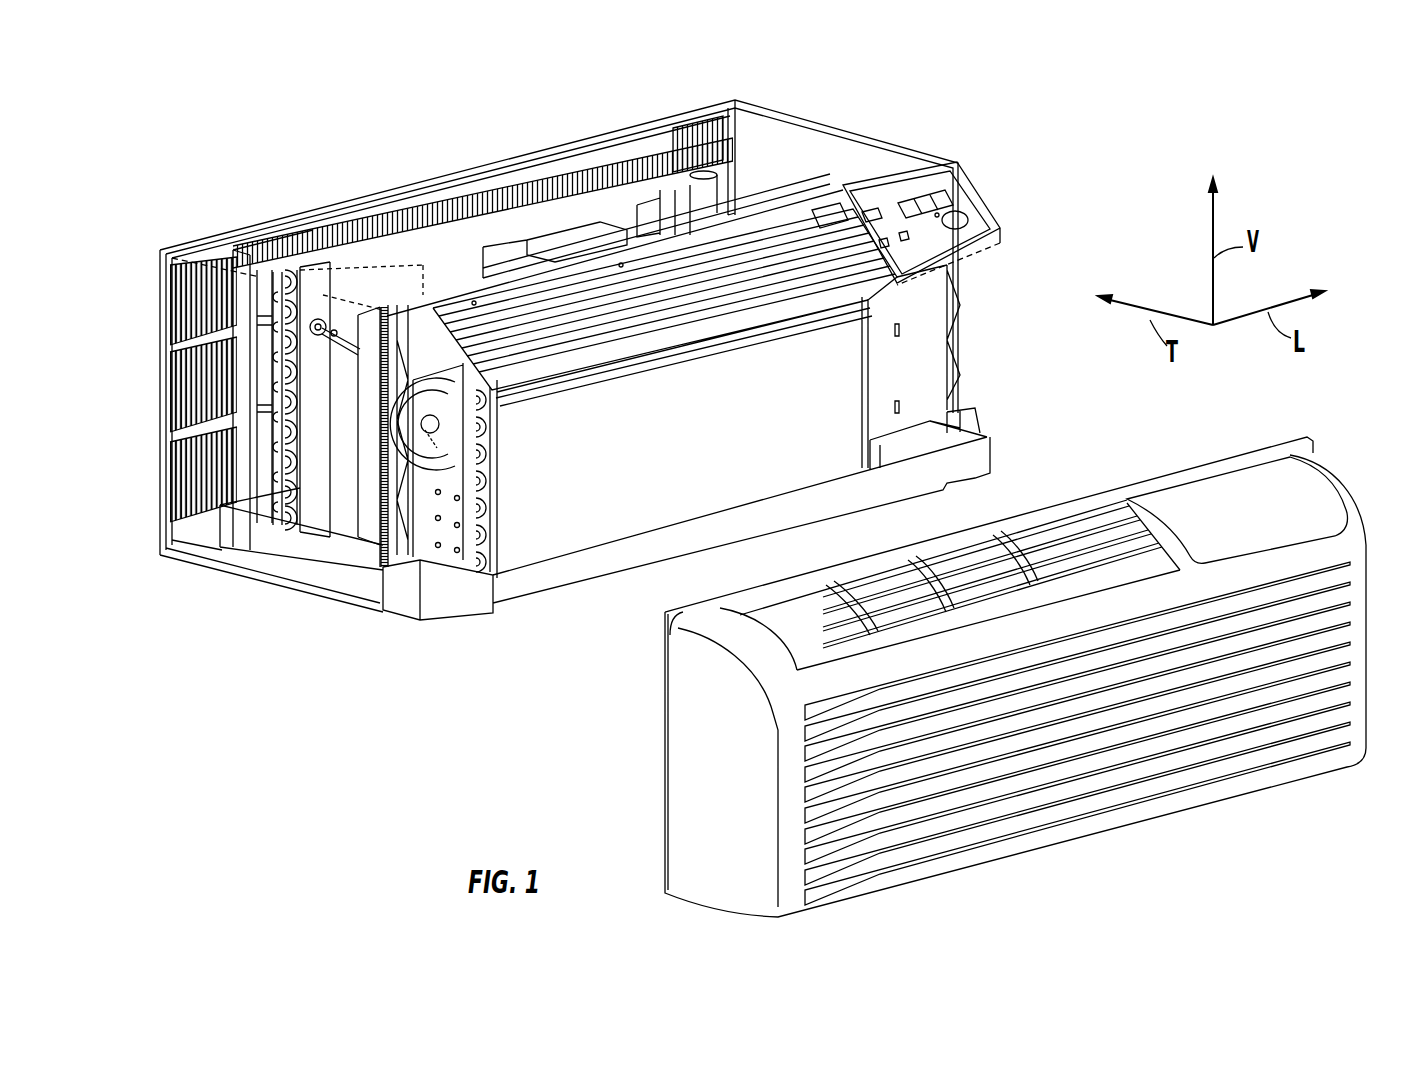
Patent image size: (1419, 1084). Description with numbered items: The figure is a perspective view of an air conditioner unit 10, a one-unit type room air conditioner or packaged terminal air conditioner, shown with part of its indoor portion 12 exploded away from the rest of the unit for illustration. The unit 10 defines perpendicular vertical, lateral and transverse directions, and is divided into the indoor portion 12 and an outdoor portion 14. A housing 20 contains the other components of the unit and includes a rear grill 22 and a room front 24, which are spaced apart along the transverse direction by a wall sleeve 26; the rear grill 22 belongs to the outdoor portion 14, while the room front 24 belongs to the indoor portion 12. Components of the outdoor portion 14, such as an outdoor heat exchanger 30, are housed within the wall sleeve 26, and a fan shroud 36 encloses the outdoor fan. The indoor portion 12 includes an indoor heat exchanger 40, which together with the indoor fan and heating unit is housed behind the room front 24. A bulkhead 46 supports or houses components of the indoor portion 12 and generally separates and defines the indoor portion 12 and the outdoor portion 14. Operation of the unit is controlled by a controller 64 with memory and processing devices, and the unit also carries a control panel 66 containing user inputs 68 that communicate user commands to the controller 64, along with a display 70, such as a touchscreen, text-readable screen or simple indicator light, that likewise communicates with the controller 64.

The air conditioner unit 10 is at (752, 498).
The indoor portion 12 is at (582, 394).
The outdoor portion 14 is at (266, 592).
The housing 20 is at (582, 394).
The rear grill 22 is at (559, 348).
The room front 24 is at (1345, 536).
The wall sleeve 26 is at (793, 143).
The outdoor heat exchanger 30 is at (285, 447).
The fan shroud 36 is at (443, 247).
The indoor heat exchanger 40 is at (530, 540).
The bulkhead 46 is at (383, 515).
The controller 64 is at (931, 194).
The control panel 66 is at (857, 210).
The user inputs 68 is at (872, 213).
The display 70 is at (950, 197).